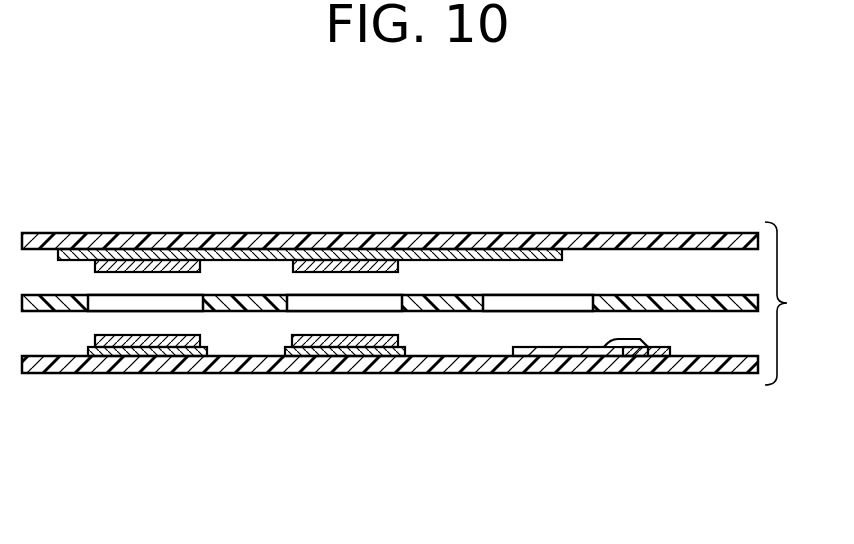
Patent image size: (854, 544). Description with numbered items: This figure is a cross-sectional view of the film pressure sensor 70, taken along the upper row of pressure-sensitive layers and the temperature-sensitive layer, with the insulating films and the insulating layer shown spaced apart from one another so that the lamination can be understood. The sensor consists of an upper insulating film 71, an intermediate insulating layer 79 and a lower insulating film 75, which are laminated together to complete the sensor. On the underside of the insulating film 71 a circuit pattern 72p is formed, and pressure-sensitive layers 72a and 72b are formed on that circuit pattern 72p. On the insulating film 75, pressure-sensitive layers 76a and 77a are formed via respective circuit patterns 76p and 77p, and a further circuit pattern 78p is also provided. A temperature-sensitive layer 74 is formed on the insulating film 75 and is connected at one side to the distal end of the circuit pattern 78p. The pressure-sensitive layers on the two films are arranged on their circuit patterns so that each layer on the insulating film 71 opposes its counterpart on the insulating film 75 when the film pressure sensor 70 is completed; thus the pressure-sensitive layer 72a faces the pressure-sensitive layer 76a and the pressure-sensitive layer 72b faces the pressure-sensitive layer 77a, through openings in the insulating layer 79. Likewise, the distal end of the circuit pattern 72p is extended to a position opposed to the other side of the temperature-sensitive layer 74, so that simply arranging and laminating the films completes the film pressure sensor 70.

The film pressure sensor 70 is at (794, 303).
The insulating film 71 is at (613, 241).
The circuit pattern 72p is at (236, 256).
The pressure-sensitive layer 72a is at (145, 267).
The pressure-sensitive layer 72b is at (338, 267).
The insulating layer 79 is at (702, 303).
The insulating film 75 is at (483, 365).
The pressure-sensitive layer 76a is at (120, 342).
The circuit pattern 76p is at (185, 352).
The pressure-sensitive layer 77a is at (315, 342).
The circuit pattern 77p is at (375, 352).
The temperature-sensitive layer 74 is at (545, 352).
The circuit pattern 78p is at (653, 352).